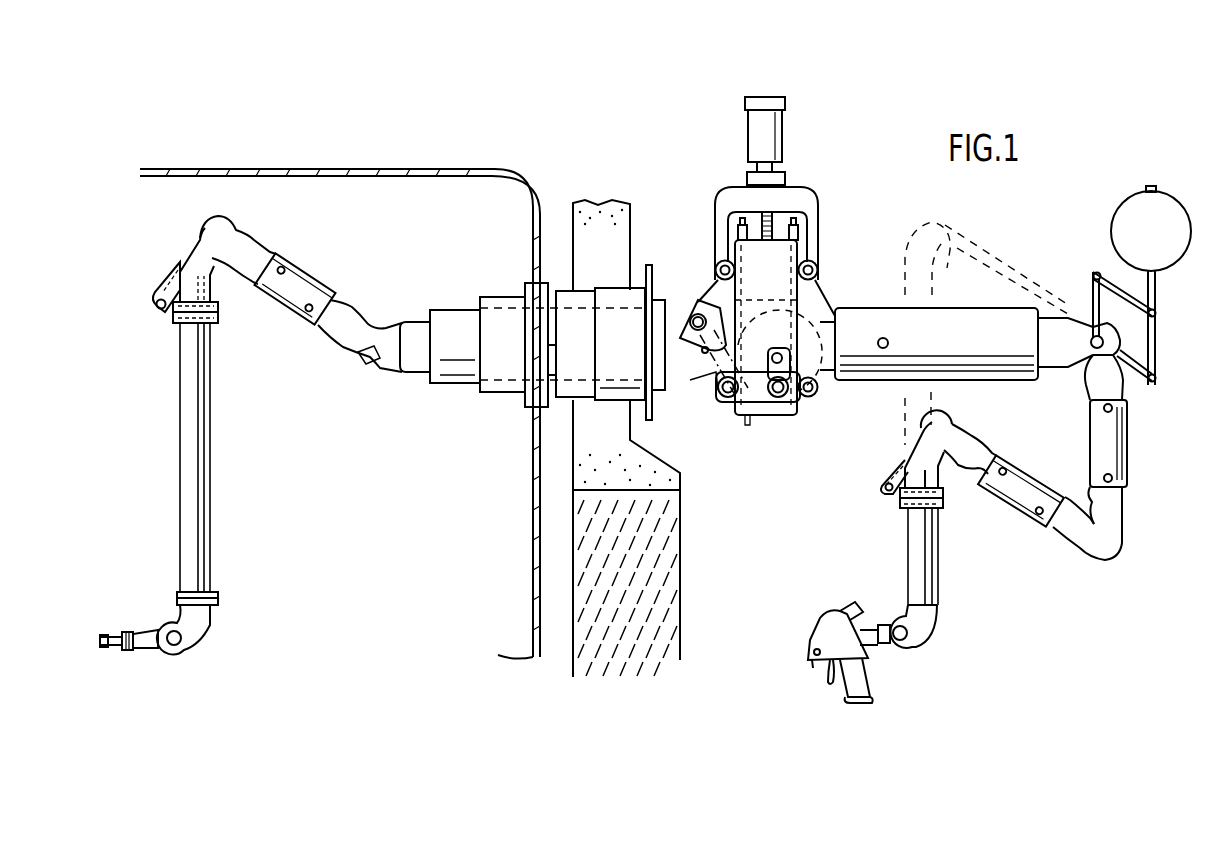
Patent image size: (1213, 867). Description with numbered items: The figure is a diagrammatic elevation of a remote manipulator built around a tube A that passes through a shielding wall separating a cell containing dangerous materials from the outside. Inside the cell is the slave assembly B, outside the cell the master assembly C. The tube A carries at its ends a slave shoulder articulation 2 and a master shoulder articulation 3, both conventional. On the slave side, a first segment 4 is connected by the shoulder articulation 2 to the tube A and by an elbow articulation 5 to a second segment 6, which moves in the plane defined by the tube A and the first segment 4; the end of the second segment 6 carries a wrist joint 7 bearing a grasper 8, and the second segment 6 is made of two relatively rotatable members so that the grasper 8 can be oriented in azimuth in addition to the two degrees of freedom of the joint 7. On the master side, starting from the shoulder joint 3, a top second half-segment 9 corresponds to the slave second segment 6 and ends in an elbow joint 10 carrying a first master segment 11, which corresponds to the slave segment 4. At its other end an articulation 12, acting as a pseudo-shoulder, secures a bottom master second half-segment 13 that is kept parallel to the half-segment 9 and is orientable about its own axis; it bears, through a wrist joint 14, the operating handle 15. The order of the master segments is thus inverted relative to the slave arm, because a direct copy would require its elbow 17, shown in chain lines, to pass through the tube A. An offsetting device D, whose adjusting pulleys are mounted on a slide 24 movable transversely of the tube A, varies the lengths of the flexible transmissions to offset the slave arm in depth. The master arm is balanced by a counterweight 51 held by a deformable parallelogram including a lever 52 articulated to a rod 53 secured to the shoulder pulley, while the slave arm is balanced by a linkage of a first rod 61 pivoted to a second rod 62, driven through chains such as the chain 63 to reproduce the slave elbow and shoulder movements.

The slave shoulder articulation 2 is at (384, 340).
The master shoulder articulation 3 is at (1070, 312).
The first segment 4 is at (300, 286).
The elbow articulation 5 is at (228, 236).
The second segment 6 is at (212, 388).
The wrist joint 7 is at (200, 636).
The grasper 8 is at (142, 615).
The top second half-segment 9 is at (1095, 437).
The elbow joint 10 is at (1092, 556).
The first master segment 11 is at (1030, 468).
The articulation 12 is at (918, 425).
The bottom master second half-segment 13 is at (910, 556).
The wrist joint 14 is at (925, 622).
The operating handle 15 is at (805, 634).
The elbow 17 is at (925, 236).
The slide 24 is at (784, 276).
The counterweight 51 is at (1166, 244).
The lever 52 is at (1150, 332).
The rod 53 is at (1133, 358).
The first rod 61 is at (778, 348).
The second rod 62 is at (748, 412).
The chain 63 is at (705, 390).
The tube A is at (642, 255).
The slave assembly B is at (376, 254).
The master assembly C is at (1128, 380).
The offsetting device D is at (846, 188).